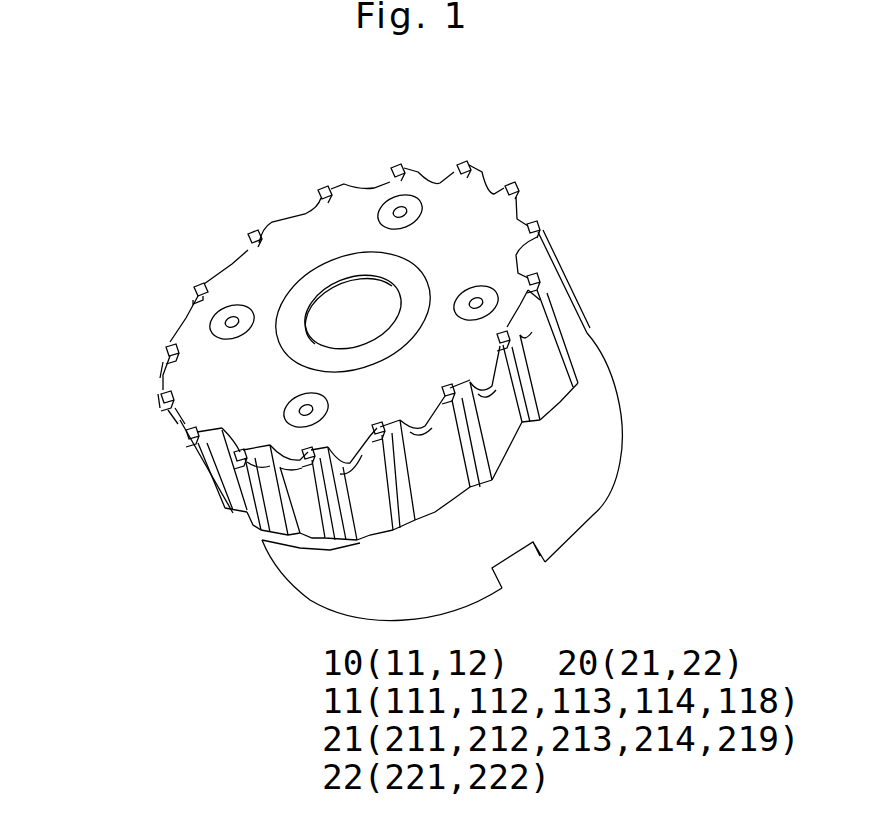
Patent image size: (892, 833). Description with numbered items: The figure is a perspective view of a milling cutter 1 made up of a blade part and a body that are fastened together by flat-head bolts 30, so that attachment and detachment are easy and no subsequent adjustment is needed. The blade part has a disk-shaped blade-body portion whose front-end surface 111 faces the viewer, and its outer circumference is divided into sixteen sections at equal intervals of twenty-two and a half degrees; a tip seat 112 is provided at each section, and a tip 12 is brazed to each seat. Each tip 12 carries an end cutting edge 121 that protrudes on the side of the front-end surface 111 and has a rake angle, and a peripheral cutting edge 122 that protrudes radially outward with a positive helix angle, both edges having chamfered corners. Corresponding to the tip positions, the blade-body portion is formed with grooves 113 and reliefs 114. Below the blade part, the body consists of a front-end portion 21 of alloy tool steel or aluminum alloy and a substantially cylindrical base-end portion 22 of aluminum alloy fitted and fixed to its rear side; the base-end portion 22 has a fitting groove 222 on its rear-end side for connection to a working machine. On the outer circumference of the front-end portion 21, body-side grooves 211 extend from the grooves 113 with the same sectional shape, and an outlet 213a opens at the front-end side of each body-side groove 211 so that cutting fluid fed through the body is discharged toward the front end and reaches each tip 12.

The milling cutter 1 is at (222, 240).
The tip 12 is at (550, 285).
The front-end portion 21 is at (568, 331).
The base-end portion 22 is at (568, 447).
The flat-head bolt 30 is at (404, 210).
The front-end surface 111 is at (278, 403).
The tip seat 112 is at (516, 200).
The groove 113 is at (178, 414).
The relief 114 is at (540, 257).
The end cutting edge 121 is at (168, 341).
The peripheral cutting edge 122 is at (171, 339).
The body-side groove 211 is at (292, 517).
The outlet 213a is at (270, 472).
The fitting groove 222 is at (545, 562).